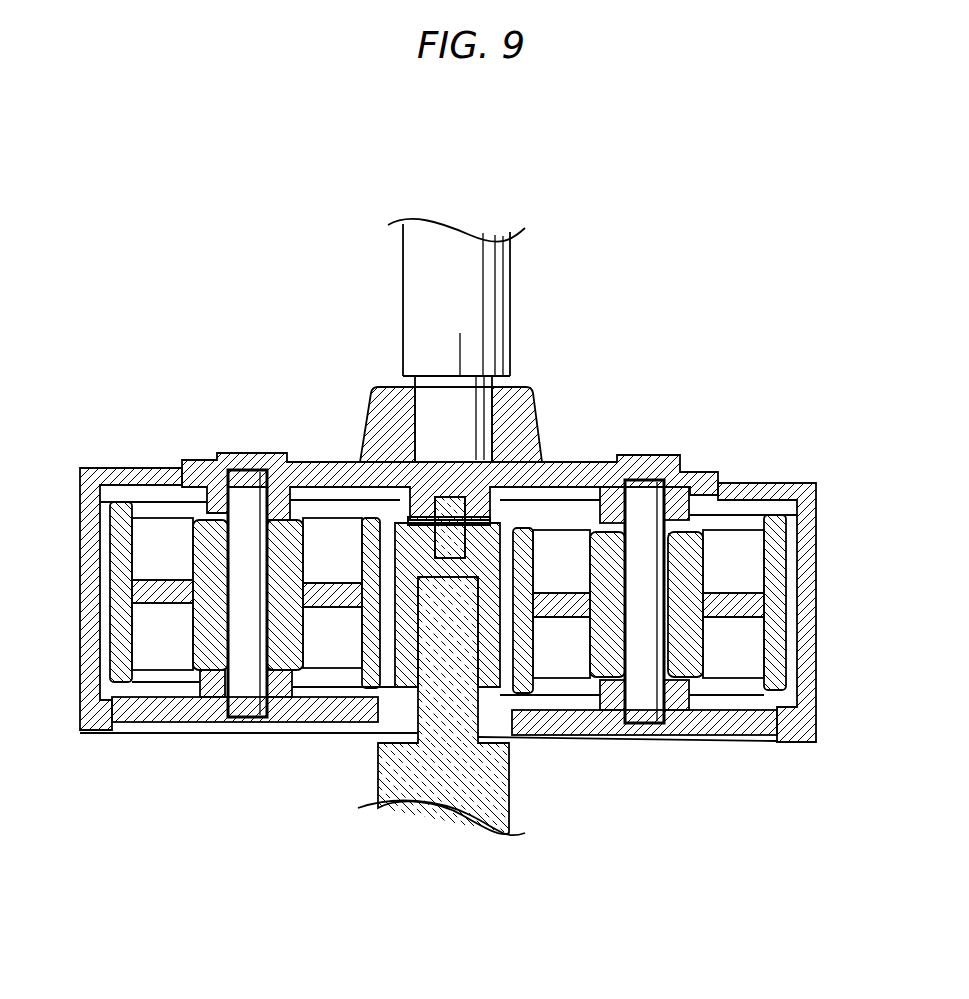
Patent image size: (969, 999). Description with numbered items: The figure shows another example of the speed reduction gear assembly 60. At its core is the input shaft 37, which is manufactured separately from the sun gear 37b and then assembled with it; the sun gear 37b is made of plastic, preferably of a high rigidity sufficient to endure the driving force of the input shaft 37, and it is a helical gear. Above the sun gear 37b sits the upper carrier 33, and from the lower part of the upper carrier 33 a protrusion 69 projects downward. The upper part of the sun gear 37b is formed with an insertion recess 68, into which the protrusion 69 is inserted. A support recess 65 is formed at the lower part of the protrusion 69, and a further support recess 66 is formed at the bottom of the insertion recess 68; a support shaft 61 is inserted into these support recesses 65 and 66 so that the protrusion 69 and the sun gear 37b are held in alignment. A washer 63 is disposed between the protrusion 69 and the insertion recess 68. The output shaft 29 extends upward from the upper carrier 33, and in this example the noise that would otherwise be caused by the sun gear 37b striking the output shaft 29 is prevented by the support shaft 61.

The output shaft 29 is at (493, 273).
The upper carrier 33 is at (536, 420).
The speed reduction gear assembly 60 is at (283, 415).
The support shaft 61 is at (435, 535).
The washer 63 is at (435, 497).
The support recess 65 is at (447, 518).
The support recess 66 is at (468, 540).
The insertion recess 68 is at (480, 503).
The protrusion 69 is at (487, 495).
The input shaft 37 is at (483, 810).
The sun gear 37b is at (420, 672).